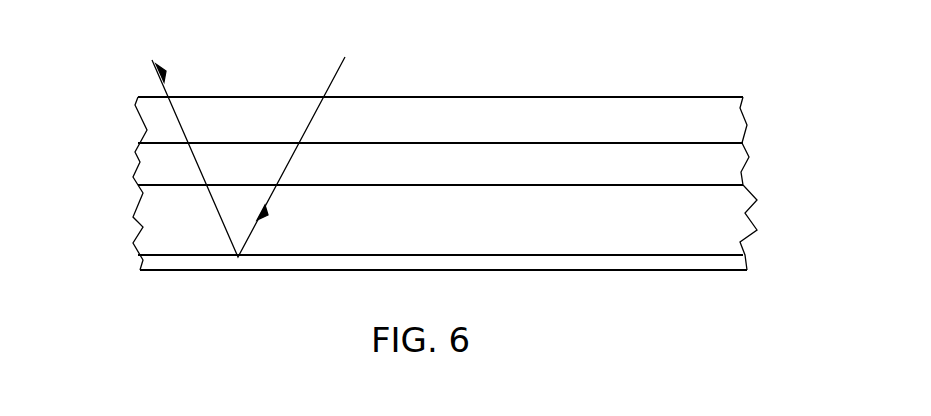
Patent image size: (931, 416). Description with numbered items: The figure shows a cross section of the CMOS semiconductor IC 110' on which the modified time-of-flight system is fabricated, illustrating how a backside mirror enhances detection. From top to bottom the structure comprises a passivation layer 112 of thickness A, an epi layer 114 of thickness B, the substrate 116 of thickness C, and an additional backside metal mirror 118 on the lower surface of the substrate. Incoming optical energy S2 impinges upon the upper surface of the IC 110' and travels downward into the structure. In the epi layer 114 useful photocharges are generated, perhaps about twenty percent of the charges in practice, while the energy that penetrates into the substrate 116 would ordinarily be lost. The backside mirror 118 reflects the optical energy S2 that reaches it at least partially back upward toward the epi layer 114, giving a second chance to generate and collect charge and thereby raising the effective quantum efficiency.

The CMOS semiconductor IC 110' is at (394, 159).
The passivation layer 112 is at (650, 96).
The epi layer 114 is at (752, 168).
The substrate 116 is at (748, 201).
The backside metal mirror 118 is at (727, 264).
The incoming optical energy S2 is at (232, 132).